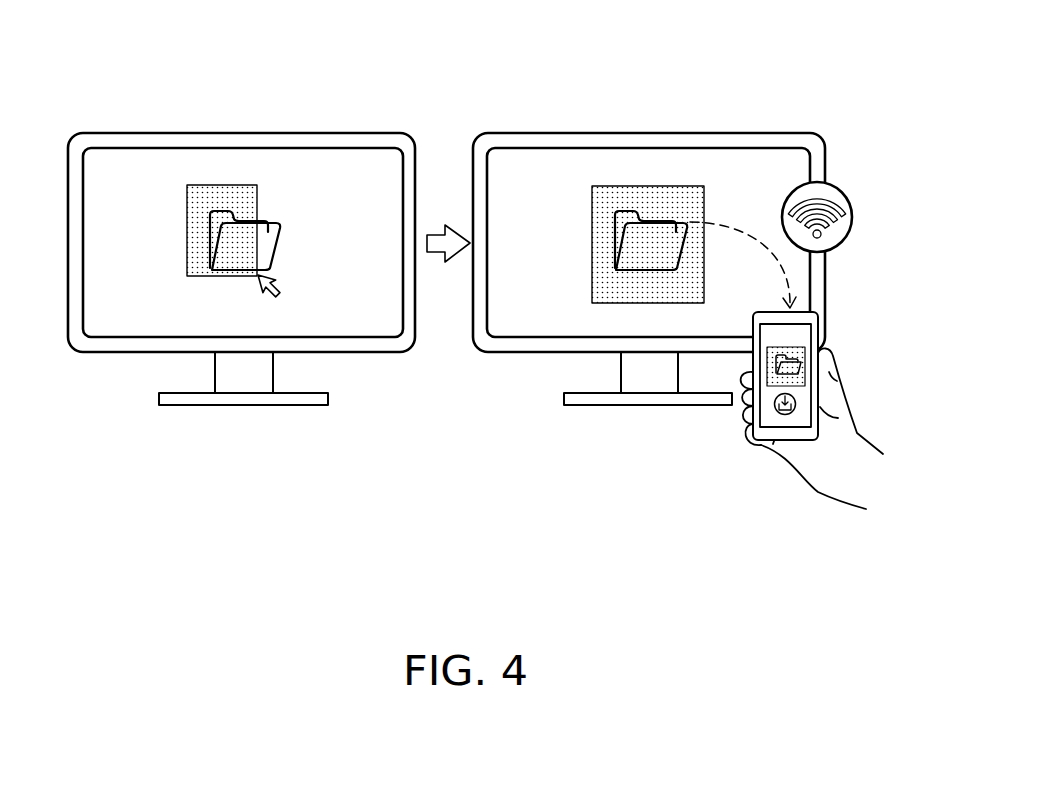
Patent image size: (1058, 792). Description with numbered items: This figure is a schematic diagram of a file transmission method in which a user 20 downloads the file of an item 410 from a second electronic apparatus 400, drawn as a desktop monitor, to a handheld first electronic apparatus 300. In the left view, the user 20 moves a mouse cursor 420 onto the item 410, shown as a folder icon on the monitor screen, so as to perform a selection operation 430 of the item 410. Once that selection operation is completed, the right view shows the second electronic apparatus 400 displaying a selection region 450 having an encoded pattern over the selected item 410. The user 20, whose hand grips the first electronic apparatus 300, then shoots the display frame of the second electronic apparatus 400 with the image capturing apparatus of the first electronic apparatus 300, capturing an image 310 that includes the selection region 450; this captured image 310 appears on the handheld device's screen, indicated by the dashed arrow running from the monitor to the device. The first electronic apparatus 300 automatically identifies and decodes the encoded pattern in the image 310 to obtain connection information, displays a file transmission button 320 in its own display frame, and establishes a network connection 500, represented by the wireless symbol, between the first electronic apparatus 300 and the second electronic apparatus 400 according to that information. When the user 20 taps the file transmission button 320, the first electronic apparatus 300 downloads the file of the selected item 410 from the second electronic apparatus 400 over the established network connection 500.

The second electronic apparatus 400 is at (128, 132).
The selection operation 430 is at (200, 186).
The item 410 is at (279, 226).
The mouse cursor 420 is at (281, 283).
The selection region 450 is at (607, 188).
The network connection 500 is at (845, 190).
The first electronic apparatus 300 is at (772, 443).
The image 310 is at (798, 347).
The file transmission button 320 is at (786, 416).
The user 20 is at (833, 472).